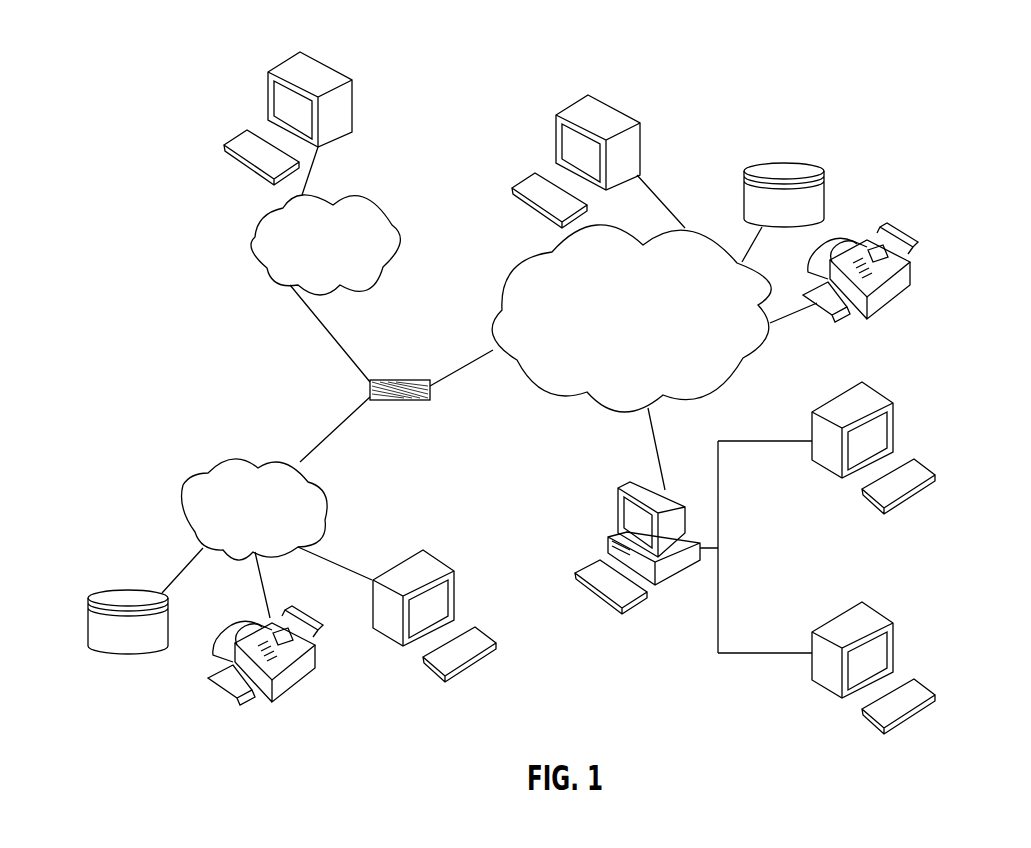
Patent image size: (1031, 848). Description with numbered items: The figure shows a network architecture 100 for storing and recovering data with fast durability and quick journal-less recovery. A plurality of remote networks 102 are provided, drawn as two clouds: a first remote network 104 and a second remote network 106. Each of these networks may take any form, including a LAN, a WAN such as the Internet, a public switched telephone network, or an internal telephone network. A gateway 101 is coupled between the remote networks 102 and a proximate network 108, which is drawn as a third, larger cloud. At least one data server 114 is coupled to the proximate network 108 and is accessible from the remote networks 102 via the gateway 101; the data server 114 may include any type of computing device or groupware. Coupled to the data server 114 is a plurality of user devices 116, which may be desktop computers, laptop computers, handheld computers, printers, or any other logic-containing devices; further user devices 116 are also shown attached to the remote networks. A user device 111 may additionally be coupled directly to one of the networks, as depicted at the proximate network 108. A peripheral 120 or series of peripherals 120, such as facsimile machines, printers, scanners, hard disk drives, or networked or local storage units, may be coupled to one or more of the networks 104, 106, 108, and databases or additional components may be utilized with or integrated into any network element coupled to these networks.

The network architecture 100 is at (932, 88).
The gateway 101 is at (398, 380).
The remote networks 102 is at (235, 318).
The first remote network 104 is at (183, 484).
The second remote network 106 is at (400, 252).
The proximate network 108 is at (741, 374).
The user device 111 is at (641, 156).
The data server 114 is at (617, 511).
The user devices 116 is at (353, 107).
The peripheral 120 is at (783, 162).